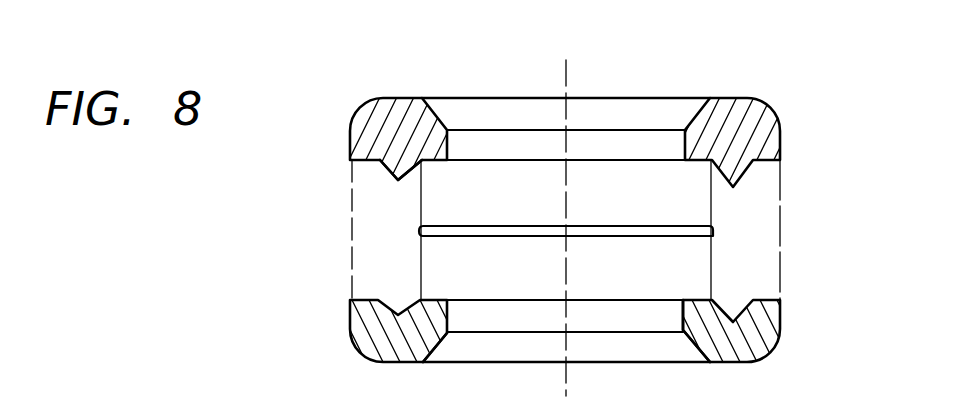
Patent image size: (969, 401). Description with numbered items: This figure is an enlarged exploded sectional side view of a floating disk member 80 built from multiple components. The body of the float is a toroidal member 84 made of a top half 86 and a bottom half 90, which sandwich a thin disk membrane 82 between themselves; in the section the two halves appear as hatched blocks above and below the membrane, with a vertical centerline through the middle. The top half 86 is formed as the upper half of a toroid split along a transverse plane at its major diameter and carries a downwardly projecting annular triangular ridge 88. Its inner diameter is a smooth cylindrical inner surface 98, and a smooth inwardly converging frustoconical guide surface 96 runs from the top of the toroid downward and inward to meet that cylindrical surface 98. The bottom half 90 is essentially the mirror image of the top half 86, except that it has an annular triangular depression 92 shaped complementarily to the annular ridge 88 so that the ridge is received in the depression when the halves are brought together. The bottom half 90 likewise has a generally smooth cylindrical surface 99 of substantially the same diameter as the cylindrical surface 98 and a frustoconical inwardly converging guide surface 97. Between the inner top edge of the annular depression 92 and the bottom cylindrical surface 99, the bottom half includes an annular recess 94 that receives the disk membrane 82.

The floating disk member 80 is at (752, 71).
The disk membrane 82 is at (683, 227).
The toroidal member 84 is at (287, 123).
The top half 86 is at (772, 108).
The annular triangular ridge 88 is at (380, 169).
The bottom half 90 is at (778, 356).
The annular triangular depression 92 is at (413, 300).
The annular recess 94 is at (673, 301).
The frustoconical guide surface 96 is at (426, 101).
The frustoconical inwardly converging guide surface 97 is at (447, 363).
The cylindrical inner surface 98 is at (613, 142).
The cylindrical surface 99 is at (681, 322).